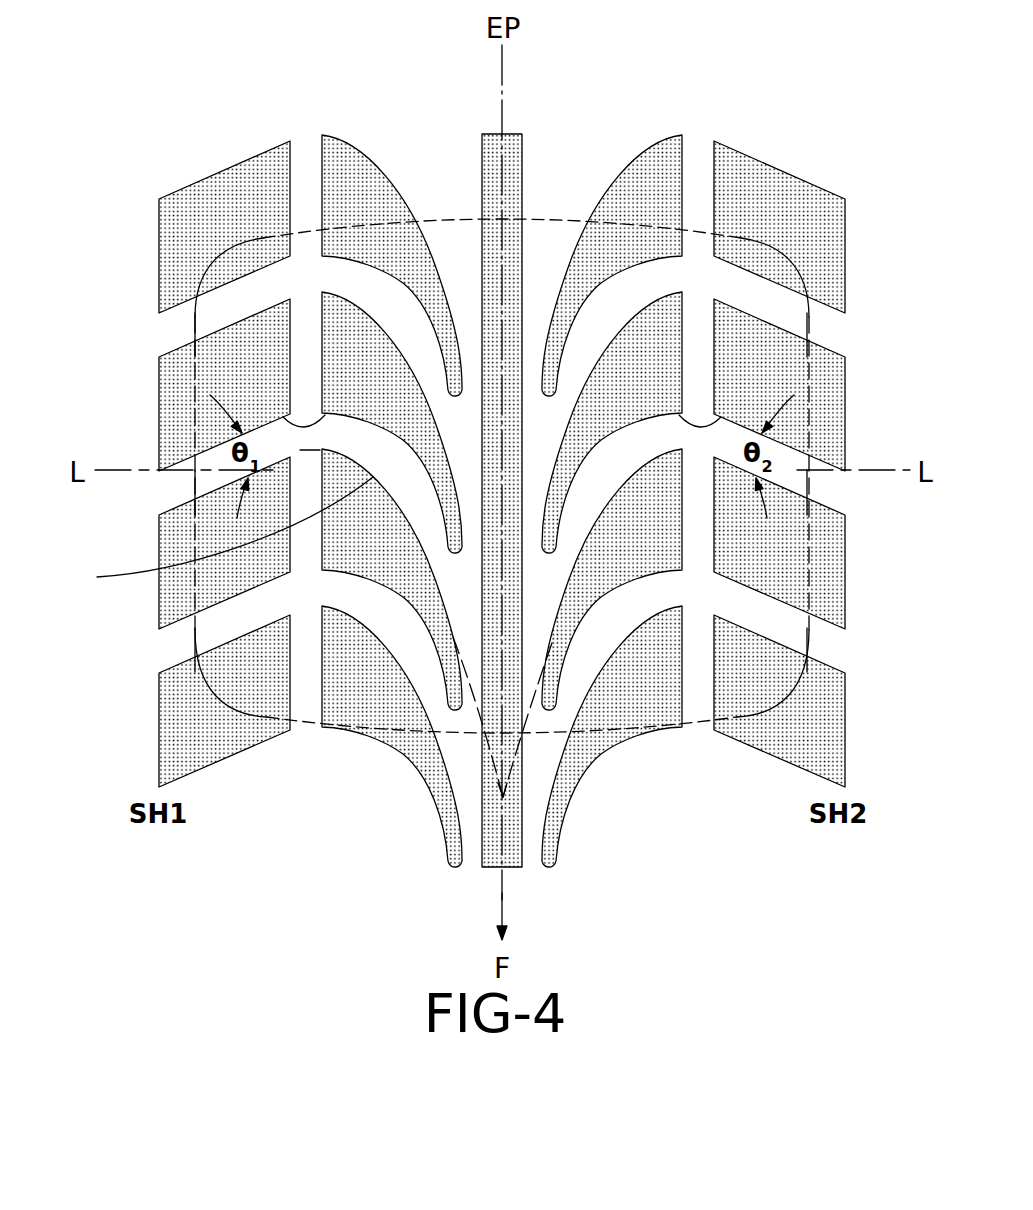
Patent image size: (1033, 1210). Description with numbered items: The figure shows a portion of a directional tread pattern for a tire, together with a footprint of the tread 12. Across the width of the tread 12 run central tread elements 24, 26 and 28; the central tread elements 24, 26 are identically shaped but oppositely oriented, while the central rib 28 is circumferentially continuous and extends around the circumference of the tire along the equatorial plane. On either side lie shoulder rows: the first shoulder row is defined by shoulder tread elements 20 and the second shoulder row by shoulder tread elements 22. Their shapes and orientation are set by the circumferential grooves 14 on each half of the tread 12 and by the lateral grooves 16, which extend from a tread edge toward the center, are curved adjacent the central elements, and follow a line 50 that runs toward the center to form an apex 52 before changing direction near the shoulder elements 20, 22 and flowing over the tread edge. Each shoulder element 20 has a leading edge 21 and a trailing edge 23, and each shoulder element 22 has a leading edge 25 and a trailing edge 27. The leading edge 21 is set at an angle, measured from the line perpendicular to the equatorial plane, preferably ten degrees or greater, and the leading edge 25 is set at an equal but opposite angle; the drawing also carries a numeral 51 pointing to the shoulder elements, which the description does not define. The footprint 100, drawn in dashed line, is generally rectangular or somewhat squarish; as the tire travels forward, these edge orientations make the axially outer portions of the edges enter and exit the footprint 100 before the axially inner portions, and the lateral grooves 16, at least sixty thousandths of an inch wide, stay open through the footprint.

The tread 12 is at (822, 168).
The circumferential grooves 14 is at (307, 142).
The lateral grooves 16 is at (832, 328).
The shoulder tread elements 20 is at (185, 185).
The leading edge 21 is at (323, 417).
The shoulder tread elements 22 is at (740, 160).
The trailing edge 23 is at (173, 353).
The central tread element 24 is at (363, 170).
The leading edge 25 is at (678, 417).
The central tread element 26 is at (660, 142).
The trailing edge 27 is at (830, 345).
The central rib 28 is at (513, 134).
The line 50 is at (305, 623).
The shroud plate segments 51 is at (172, 510).
The apex 52 is at (503, 797).
The footprint 100 is at (170, 640).